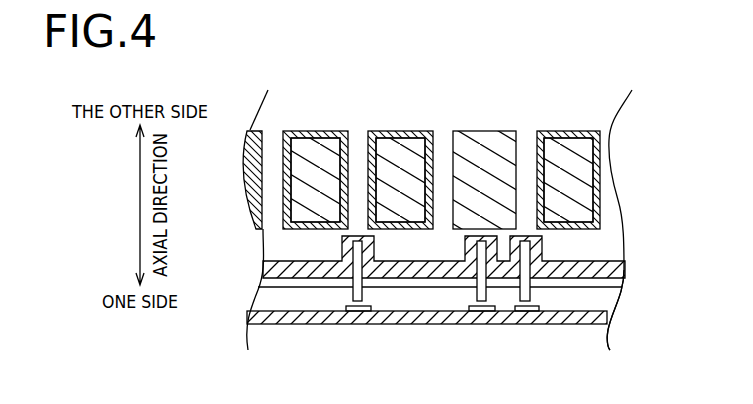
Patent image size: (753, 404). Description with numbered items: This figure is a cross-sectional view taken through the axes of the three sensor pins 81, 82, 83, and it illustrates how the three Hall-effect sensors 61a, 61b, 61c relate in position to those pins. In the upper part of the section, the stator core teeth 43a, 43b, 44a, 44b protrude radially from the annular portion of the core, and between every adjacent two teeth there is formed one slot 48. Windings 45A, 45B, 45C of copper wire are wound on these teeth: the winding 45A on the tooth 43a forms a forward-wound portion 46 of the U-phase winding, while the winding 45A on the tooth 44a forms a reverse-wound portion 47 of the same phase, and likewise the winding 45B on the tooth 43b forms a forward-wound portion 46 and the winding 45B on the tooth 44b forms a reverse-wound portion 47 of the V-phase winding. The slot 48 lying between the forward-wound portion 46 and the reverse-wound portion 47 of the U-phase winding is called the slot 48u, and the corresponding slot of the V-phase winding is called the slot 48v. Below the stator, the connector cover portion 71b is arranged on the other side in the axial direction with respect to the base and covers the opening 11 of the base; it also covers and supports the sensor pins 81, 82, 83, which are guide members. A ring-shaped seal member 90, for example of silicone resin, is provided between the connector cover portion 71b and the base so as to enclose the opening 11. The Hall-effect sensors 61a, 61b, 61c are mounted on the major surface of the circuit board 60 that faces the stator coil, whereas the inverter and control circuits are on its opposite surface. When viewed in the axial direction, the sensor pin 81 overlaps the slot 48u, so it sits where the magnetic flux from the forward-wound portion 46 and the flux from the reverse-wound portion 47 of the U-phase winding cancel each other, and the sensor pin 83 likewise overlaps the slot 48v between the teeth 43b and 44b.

The opening 11 is at (565, 300).
The tooth 43a is at (583, 143).
The tooth 43b is at (409, 140).
The tooth 44a is at (493, 143).
The tooth 44b is at (319, 138).
The winding 45A is at (482, 140).
The winding 45B is at (307, 142).
The winding 45C is at (273, 173).
The forward-wound portion 46 is at (439, 126).
The reverse-wound portion 47 is at (354, 124).
The slot 48 is at (285, 131).
The slot 48u is at (527, 173).
The slot 48v is at (357, 173).
The circuit board 60 is at (396, 334).
The Hall-effect sensor 61a is at (522, 308).
The Hall-effect sensor 61b is at (481, 308).
The Hall-effect sensor 61c is at (359, 308).
The connector cover portion 71b is at (566, 272).
The sensor pin 81 is at (528, 283).
The sensor pin 82 is at (478, 283).
The sensor pin 83 is at (355, 283).
The seal member 90 is at (610, 284).